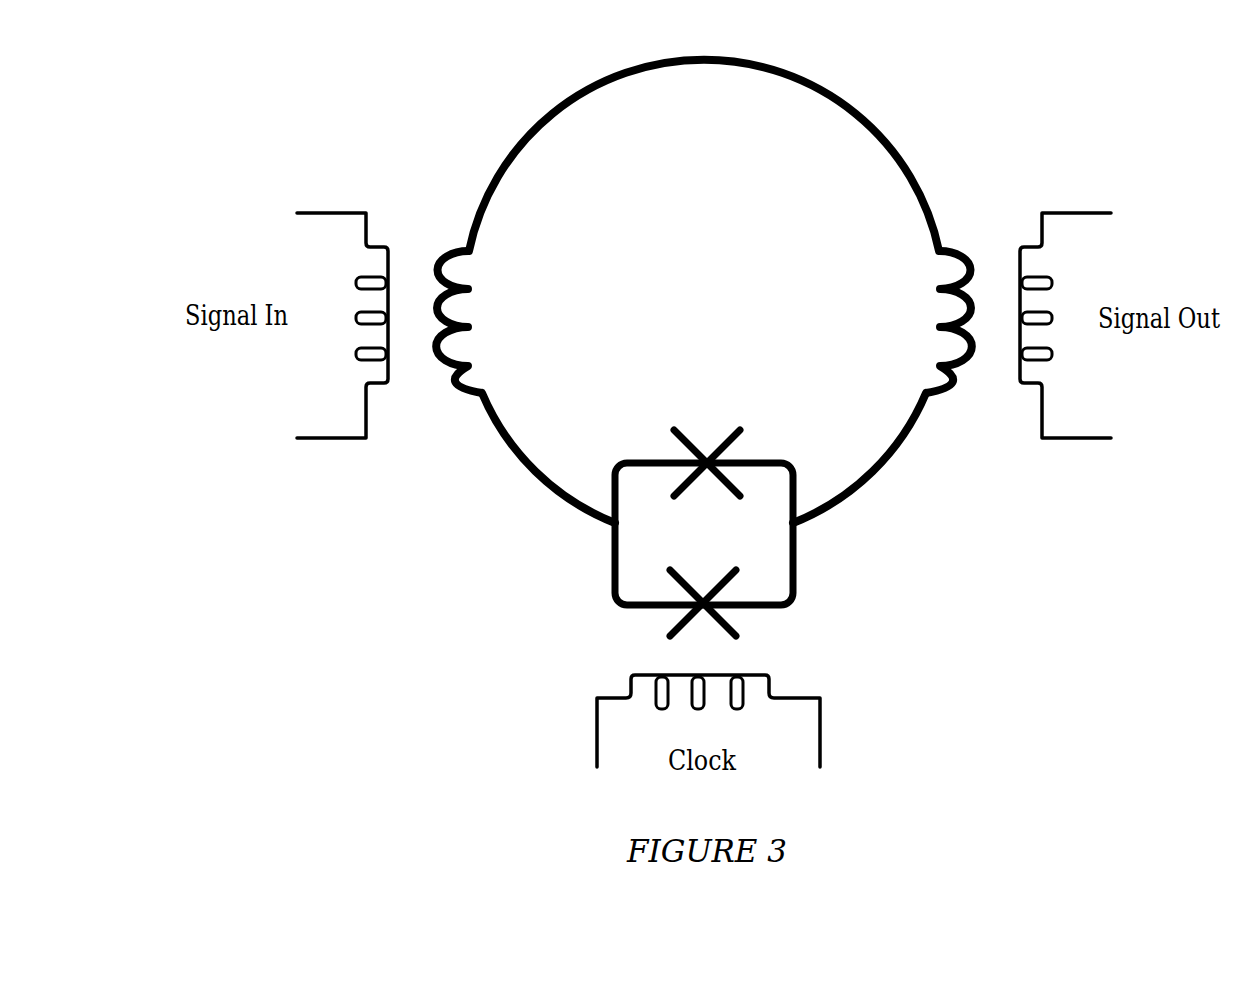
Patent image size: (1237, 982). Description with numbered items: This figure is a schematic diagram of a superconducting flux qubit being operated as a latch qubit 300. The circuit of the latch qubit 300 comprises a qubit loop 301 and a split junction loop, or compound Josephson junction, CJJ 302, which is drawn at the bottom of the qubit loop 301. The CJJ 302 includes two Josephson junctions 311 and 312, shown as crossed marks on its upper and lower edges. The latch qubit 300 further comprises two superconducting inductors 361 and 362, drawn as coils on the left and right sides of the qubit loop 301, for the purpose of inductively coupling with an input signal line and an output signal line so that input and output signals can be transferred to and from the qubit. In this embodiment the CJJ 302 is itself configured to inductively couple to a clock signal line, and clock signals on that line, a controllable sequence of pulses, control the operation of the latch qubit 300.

The latch qubit 300 is at (268, 133).
The qubit loop 301 is at (823, 84).
The split junction loop or CJJ 302 is at (607, 565).
The Josephson junction 311 is at (710, 438).
The Josephson junction 312 is at (695, 583).
The superconducting inductor 361 is at (472, 313).
The superconducting inductor 362 is at (923, 313).